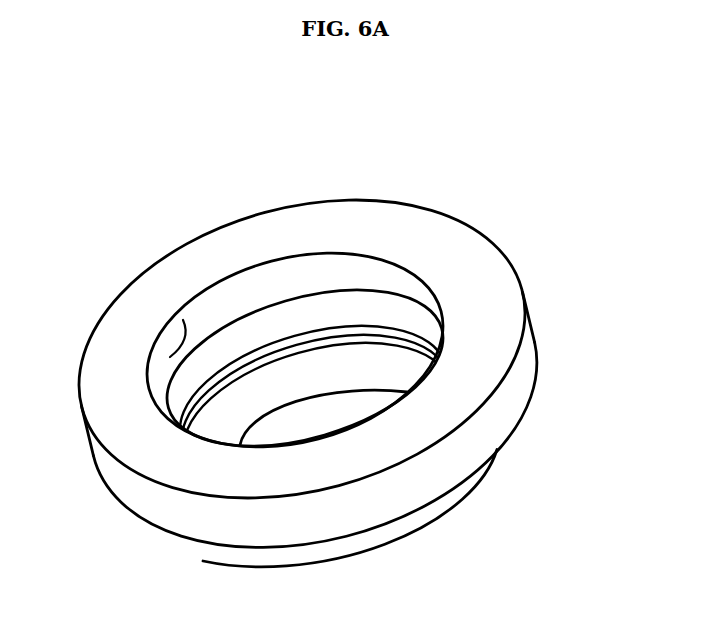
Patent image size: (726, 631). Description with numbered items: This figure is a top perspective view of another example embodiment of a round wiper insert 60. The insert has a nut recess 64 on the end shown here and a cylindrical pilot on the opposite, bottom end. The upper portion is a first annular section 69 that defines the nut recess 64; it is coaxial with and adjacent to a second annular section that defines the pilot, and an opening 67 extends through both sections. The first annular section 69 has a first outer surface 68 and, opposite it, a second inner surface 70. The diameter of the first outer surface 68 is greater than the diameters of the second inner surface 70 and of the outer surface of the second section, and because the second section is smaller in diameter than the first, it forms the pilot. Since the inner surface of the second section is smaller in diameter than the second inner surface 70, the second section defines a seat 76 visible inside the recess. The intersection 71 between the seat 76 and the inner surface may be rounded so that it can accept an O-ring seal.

The round wiper insert 60 is at (505, 160).
The nut recess 64 is at (265, 275).
The opening 67 is at (323, 405).
The first outer surface 68 is at (450, 470).
The first annular section 69 is at (518, 382).
The second inner surface 70 is at (183, 321).
The intersection 71 is at (229, 319).
The seat 76 is at (356, 302).